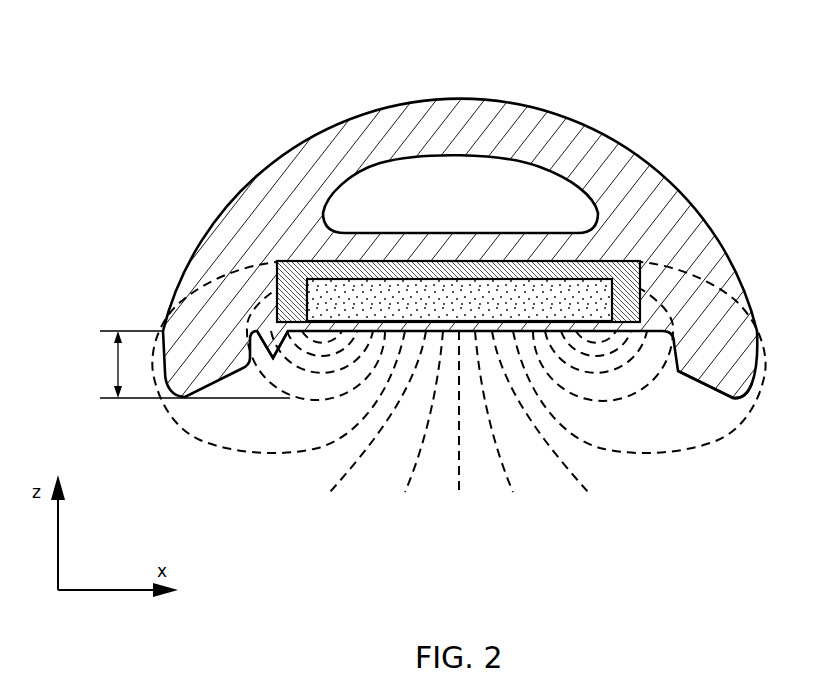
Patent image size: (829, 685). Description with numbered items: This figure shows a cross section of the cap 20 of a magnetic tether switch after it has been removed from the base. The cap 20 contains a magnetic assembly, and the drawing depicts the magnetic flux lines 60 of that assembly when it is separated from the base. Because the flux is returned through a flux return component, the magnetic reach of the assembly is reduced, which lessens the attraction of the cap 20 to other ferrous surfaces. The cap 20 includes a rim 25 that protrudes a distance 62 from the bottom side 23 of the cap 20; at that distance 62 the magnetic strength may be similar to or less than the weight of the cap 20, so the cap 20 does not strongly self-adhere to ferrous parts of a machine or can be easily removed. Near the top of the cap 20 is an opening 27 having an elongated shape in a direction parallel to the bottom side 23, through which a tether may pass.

The cap 20 is at (670, 84).
The bottom side 23 is at (259, 332).
The rim 25 is at (746, 400).
The opening 27 is at (418, 155).
The magnetic flux lines 60 is at (727, 433).
The distance 62 is at (113, 366).